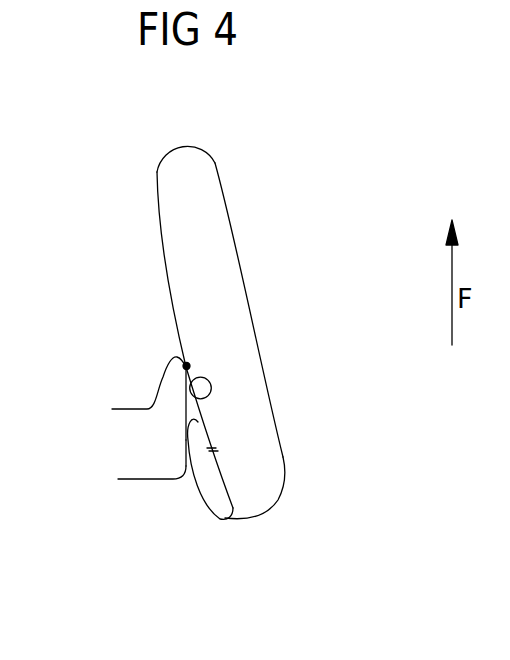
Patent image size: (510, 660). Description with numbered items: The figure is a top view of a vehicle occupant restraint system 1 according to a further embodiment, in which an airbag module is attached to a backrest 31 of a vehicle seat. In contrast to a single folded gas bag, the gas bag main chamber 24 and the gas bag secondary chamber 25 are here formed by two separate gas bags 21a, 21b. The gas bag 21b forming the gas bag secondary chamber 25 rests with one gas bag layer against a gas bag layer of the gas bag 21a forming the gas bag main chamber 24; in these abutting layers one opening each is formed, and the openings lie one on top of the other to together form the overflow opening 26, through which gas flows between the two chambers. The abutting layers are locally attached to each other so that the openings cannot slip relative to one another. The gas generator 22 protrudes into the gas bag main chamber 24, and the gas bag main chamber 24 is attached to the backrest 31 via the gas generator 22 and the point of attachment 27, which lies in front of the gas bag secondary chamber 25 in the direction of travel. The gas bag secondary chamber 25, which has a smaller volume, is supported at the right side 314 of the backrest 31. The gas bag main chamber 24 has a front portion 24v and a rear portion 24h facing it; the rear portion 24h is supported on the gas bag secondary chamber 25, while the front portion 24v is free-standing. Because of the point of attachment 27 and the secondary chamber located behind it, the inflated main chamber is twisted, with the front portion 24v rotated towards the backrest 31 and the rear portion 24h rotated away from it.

The vehicle occupant restraint system 1 is at (303, 178).
The gas bag 21a is at (273, 398).
The gas bag 21b is at (197, 493).
The gas generator 22 is at (209, 383).
The gas bag main chamber 24 is at (280, 318).
The front portion 24v is at (202, 183).
The rear portion 24h is at (273, 470).
The gas bag secondary chamber 25 is at (218, 493).
The overflow opening 26 is at (218, 450).
The point of attachment 27 is at (184, 364).
The backrest 31 is at (125, 432).
The right side 314 is at (185, 442).